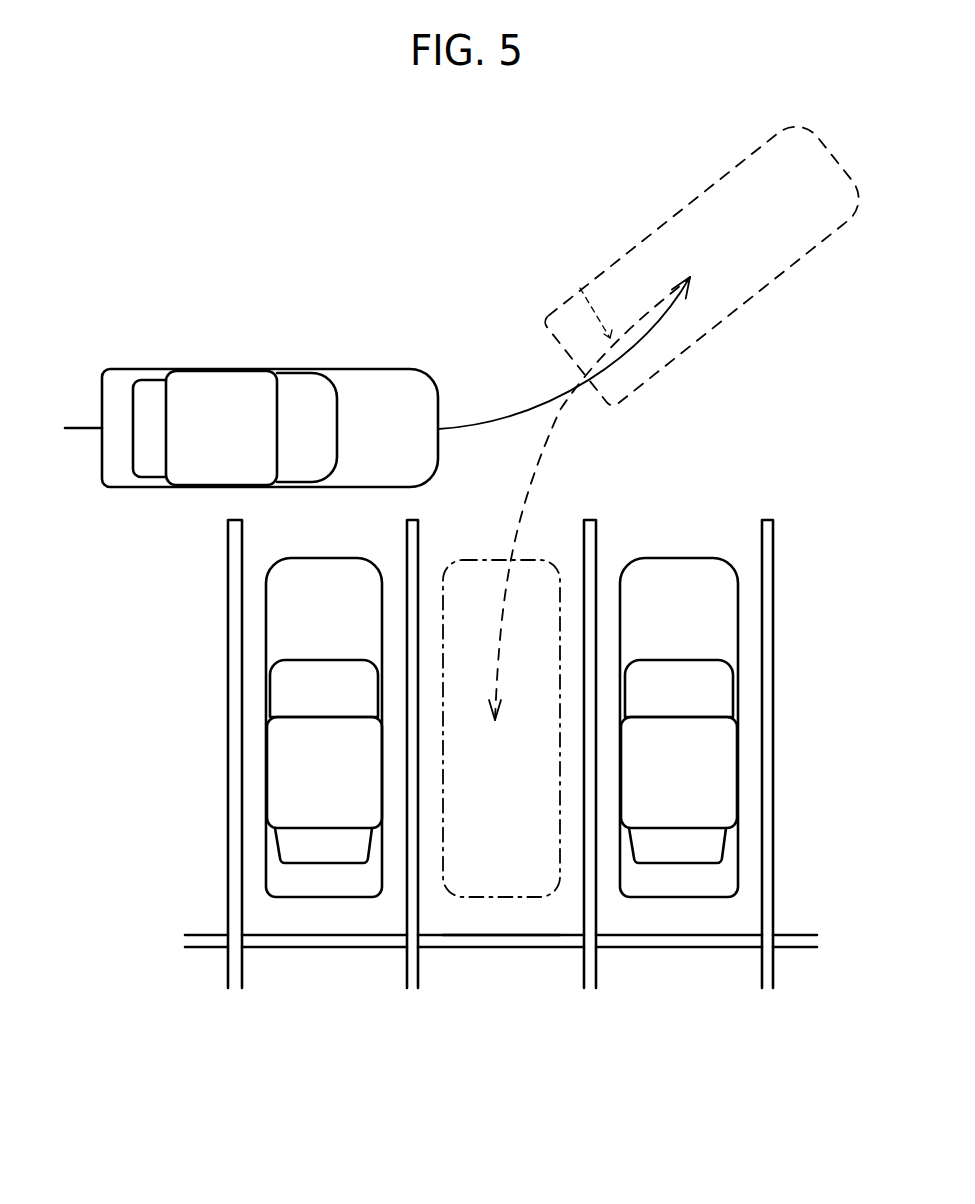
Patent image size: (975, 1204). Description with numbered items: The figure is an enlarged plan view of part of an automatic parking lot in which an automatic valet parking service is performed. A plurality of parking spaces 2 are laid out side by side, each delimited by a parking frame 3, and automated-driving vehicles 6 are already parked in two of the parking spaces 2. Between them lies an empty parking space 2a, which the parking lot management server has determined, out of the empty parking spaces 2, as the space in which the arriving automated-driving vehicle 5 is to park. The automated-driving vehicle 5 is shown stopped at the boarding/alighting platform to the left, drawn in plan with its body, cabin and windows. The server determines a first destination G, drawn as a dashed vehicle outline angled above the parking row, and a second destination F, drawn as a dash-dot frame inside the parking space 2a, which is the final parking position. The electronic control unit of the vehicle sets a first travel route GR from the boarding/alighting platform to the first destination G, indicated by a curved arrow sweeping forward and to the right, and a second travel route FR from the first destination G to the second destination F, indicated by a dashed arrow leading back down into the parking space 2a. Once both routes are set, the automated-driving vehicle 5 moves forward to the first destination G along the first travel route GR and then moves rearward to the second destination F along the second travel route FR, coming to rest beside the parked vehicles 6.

The automated-driving vehicle 5 is at (226, 395).
The first travel route GR is at (502, 418).
The first destination G is at (630, 250).
The second travel route FR is at (580, 288).
The parking frame 3 is at (235, 582).
The parking spaces 2 is at (254, 643).
The parking space 2a is at (510, 913).
The second destination F is at (560, 570).
The automated-driving vehicle 6 is at (300, 770).